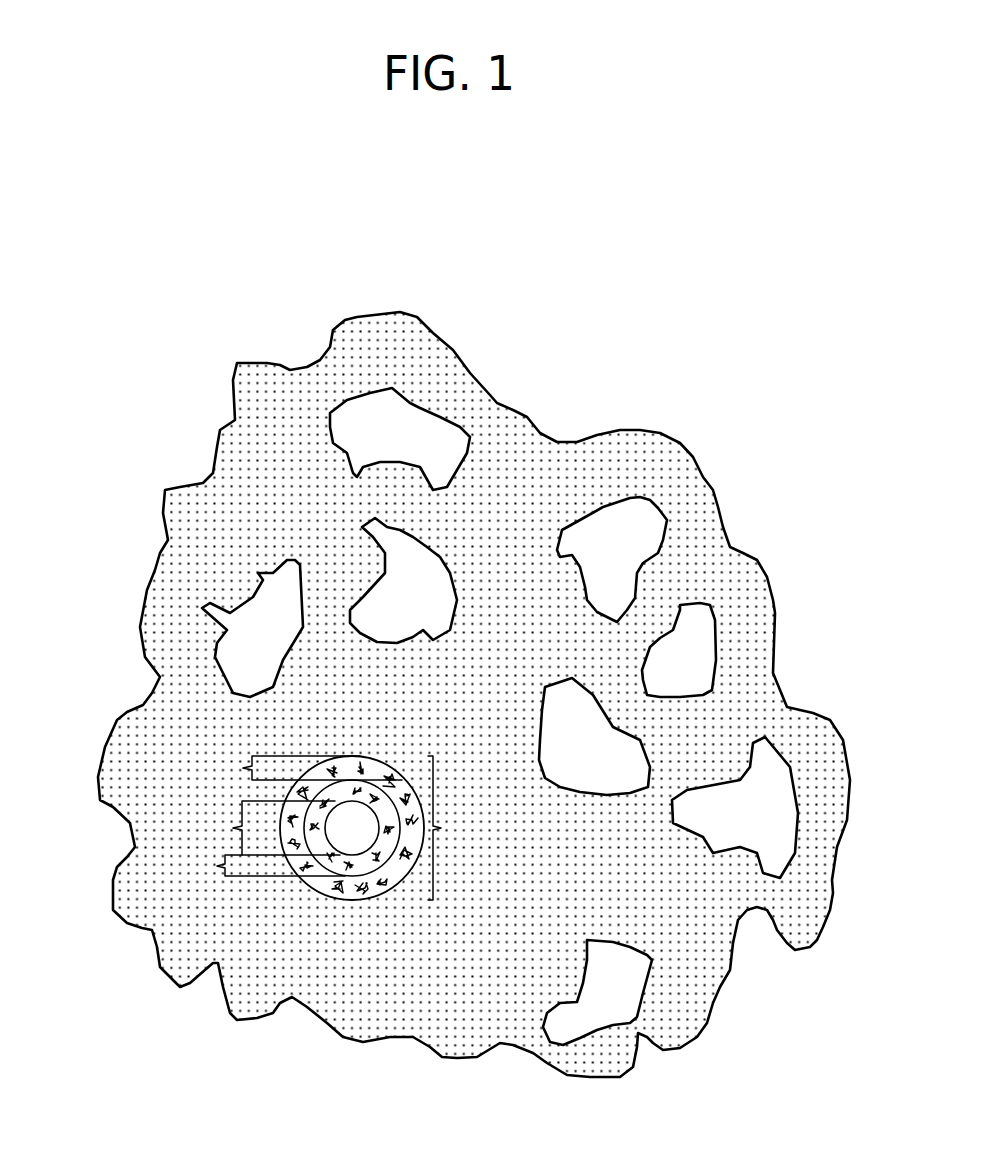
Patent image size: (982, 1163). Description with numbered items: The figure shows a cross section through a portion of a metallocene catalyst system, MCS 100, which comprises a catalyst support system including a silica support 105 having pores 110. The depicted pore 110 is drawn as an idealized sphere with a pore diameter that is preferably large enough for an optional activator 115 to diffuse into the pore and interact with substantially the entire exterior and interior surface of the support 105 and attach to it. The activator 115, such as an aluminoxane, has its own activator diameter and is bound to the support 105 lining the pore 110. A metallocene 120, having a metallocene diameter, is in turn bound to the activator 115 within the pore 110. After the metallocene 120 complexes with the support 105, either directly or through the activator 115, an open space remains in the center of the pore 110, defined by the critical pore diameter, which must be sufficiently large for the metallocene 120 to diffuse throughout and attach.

The MCS (metallocene catalyst system) 100 is at (112, 466).
The silica support 105 is at (329, 725).
The pore 110 is at (372, 750).
The activator 115 is at (377, 897).
The metallocene 120 is at (389, 787).